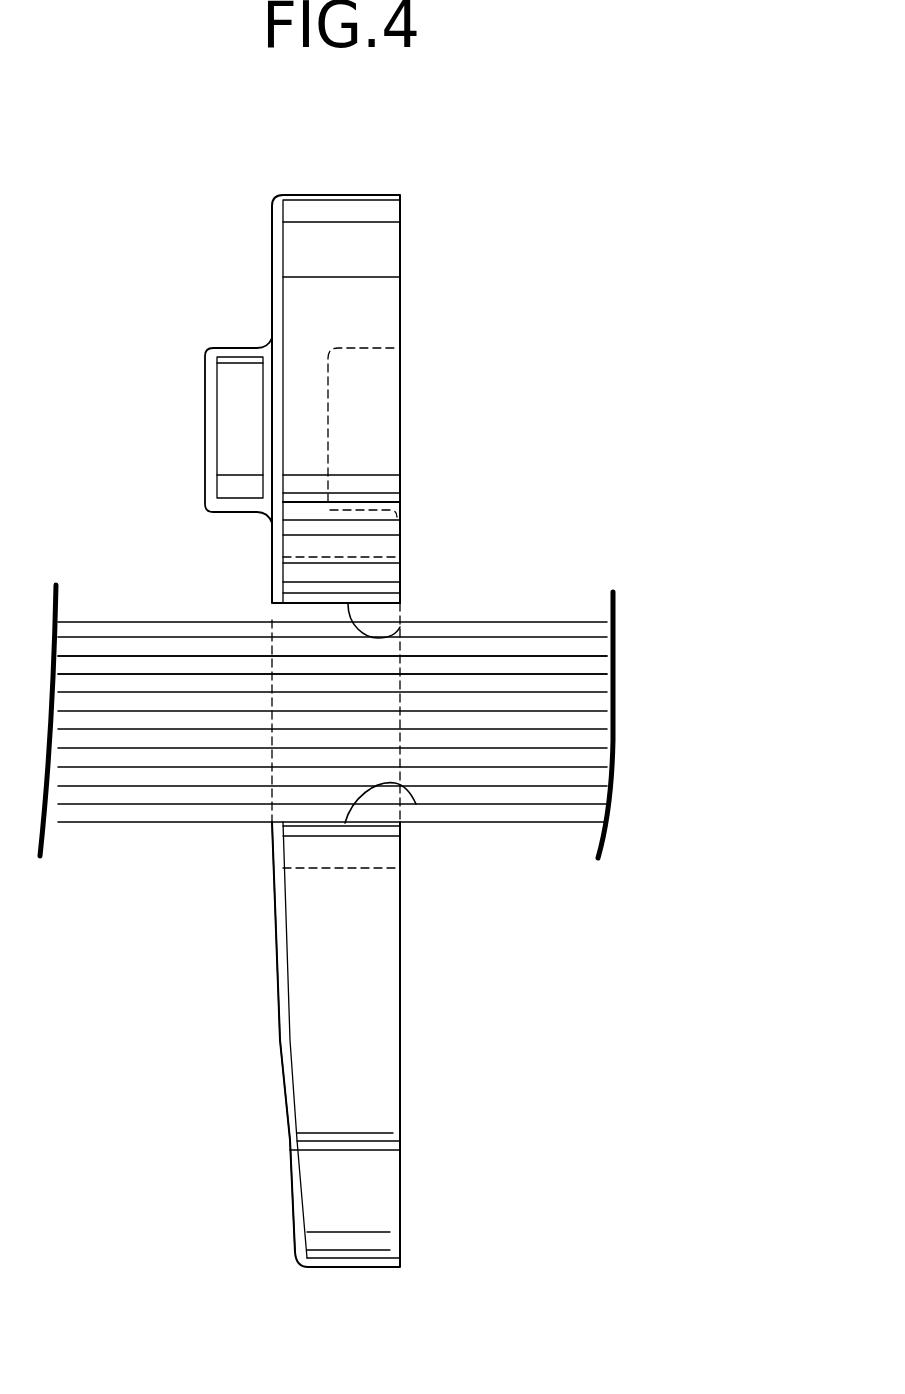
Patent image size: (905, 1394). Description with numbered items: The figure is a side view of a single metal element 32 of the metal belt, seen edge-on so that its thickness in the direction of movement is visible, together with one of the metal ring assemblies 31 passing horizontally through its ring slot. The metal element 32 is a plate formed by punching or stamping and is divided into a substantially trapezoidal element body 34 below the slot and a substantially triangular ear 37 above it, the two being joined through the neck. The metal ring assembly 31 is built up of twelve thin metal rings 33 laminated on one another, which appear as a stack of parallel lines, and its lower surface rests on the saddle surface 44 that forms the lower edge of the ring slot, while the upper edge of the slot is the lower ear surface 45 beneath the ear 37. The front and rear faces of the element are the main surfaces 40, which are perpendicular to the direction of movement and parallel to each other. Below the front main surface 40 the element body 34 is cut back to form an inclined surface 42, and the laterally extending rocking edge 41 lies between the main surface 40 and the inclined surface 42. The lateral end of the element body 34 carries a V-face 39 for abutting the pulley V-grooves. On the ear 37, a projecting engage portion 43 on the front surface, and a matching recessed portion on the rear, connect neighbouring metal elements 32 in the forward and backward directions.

The metal ring assembly 31 is at (145, 828).
The metal element 32 is at (402, 321).
The metal ring 33 is at (125, 685).
The element body 34 is at (380, 1010).
The ear 37 is at (313, 310).
The V-face 39 is at (356, 974).
The main surface 40 is at (270, 583).
The rocking edge 41 is at (270, 890).
The inclined surface 42 is at (277, 1007).
The engage portion 43 is at (233, 418).
The saddle surface 44 is at (416, 804).
The lower ear surface 45 is at (400, 627).